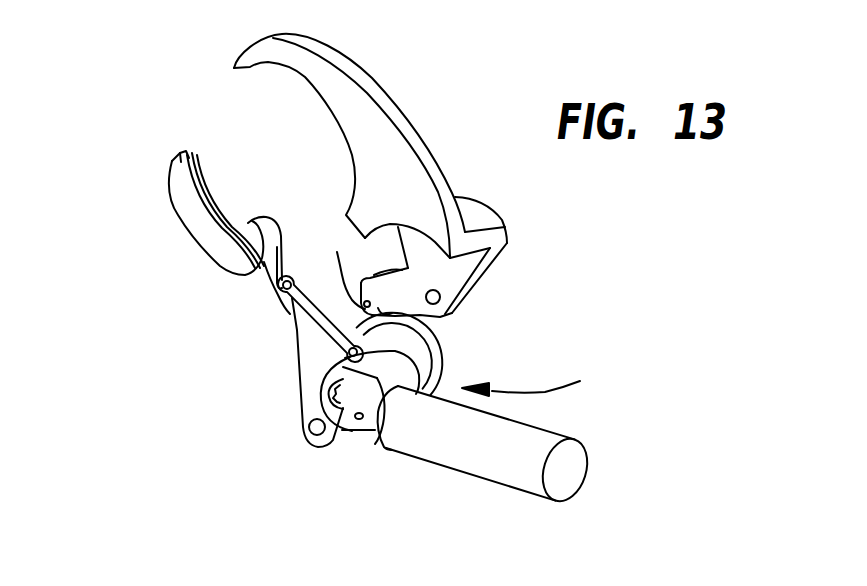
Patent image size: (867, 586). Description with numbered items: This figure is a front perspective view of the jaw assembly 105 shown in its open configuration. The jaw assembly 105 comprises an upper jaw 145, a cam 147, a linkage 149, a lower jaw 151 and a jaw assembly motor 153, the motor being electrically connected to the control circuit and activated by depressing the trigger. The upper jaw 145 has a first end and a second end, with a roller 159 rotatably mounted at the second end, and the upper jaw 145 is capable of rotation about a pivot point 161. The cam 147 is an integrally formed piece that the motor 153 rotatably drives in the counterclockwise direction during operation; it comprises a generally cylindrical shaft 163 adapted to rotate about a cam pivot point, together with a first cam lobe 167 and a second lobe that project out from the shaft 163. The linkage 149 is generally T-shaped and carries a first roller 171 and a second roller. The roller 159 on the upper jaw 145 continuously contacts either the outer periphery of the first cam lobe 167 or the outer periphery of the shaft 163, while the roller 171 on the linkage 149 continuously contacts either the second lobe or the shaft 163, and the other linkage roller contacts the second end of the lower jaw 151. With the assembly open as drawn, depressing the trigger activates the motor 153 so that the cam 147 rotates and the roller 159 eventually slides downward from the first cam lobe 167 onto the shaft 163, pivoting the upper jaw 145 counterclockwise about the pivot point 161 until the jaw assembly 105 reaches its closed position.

The jaw assembly 105 is at (124, 323).
The upper jaw 145 is at (357, 102).
The cam 147 is at (540, 384).
The linkage 149 is at (300, 393).
The lower jaw 151 is at (193, 228).
The jaw assembly motor 153 is at (563, 467).
The roller 159 is at (337, 252).
The pivot point 161 is at (440, 297).
The shaft 163 is at (395, 369).
The first cam lobe 167 is at (438, 334).
The first roller 171 is at (347, 355).